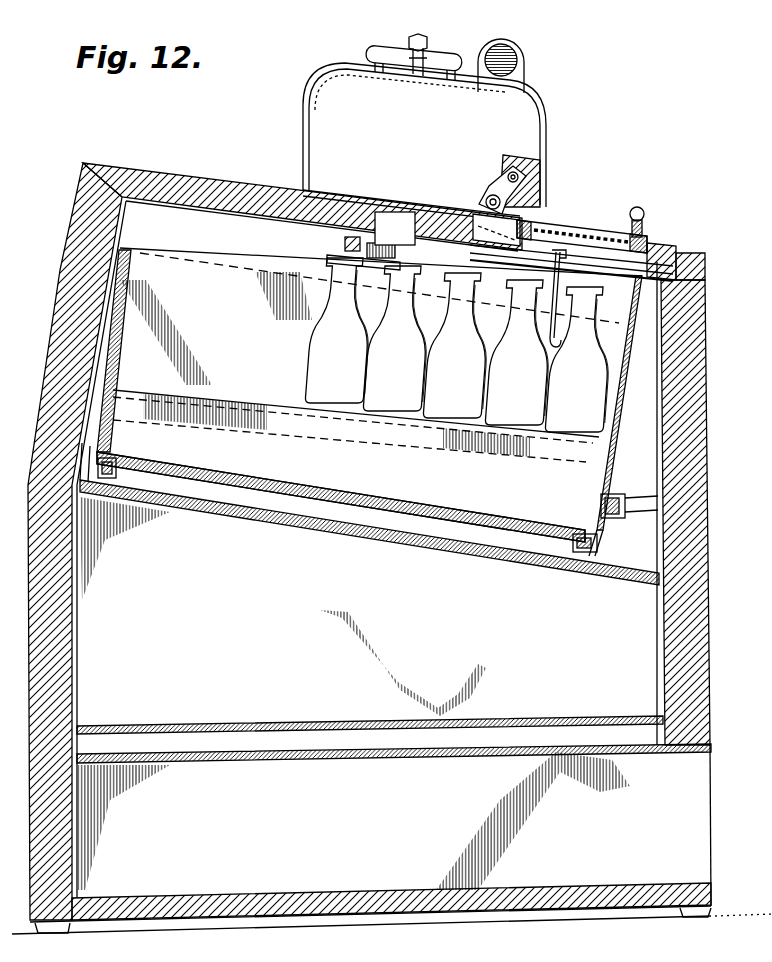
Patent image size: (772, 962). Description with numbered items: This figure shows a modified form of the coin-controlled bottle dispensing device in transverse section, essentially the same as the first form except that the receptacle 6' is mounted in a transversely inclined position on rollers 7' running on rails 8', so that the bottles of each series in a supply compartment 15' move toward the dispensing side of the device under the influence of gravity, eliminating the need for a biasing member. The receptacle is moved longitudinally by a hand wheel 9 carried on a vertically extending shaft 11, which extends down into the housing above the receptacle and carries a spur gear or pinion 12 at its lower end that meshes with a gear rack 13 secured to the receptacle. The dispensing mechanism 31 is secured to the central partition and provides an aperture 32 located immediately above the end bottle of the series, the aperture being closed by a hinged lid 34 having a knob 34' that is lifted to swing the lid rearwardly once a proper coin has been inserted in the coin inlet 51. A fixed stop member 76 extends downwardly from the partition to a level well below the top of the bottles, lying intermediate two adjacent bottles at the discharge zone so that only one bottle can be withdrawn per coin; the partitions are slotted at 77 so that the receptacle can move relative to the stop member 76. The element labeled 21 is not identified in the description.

The dispensing mechanism 31 is at (311, 96).
The hand wheel 9 is at (448, 56).
The vertically extending shaft 11 is at (372, 53).
The coin inlet 51 is at (522, 66).
The hinged lid 34 is at (582, 226).
The aperture 32 is at (600, 253).
The knob 34' is at (654, 219).
The supply compartment 15' is at (369, 389).
The receptacle 6' is at (379, 275).
The tray bottom 21 is at (374, 448).
The rails 8' is at (369, 520).
The rollers 7' is at (378, 506).
The gear rack 13 is at (345, 245).
The spur gear or pinion 12 is at (397, 252).
The fixed stop member 76 is at (548, 343).
The slot 77 is at (560, 346).